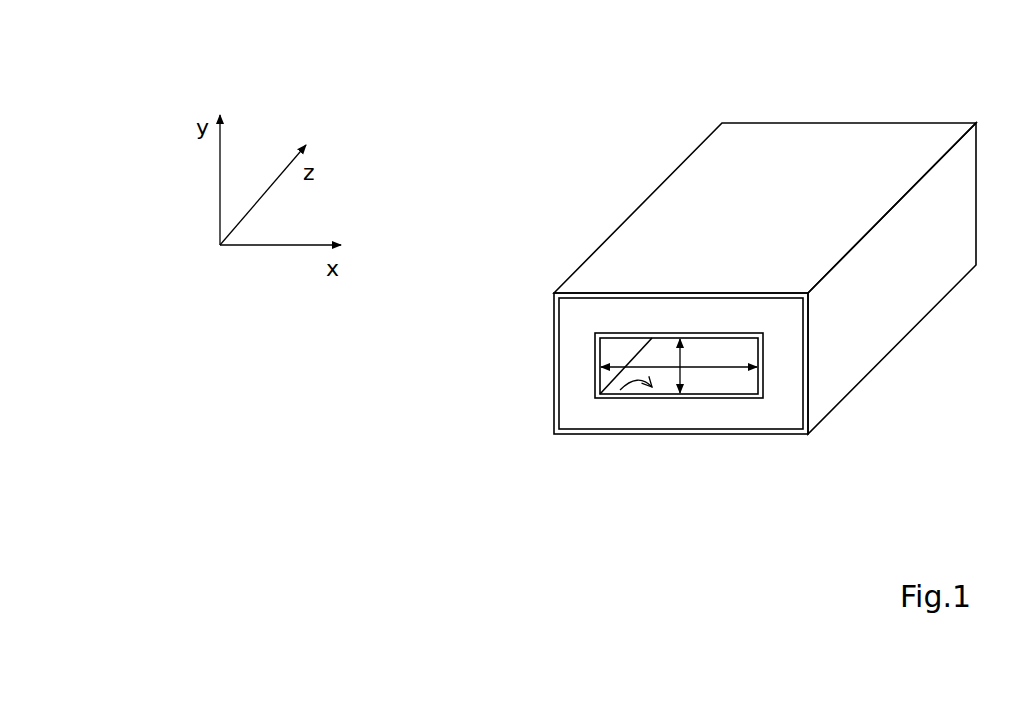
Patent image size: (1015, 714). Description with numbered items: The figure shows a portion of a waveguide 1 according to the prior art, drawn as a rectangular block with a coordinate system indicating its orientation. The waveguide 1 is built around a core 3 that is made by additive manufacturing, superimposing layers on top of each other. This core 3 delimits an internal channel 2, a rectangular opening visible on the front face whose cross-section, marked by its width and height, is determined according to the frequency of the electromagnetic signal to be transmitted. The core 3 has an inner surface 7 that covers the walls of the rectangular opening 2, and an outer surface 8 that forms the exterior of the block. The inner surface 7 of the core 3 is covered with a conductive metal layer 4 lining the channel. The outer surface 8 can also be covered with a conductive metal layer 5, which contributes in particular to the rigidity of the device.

The waveguide 1 is at (713, 348).
The internal channel 2 is at (712, 380).
The core 3 is at (571, 348).
The conductive metal layer 4 is at (672, 400).
The conductive metal layer 5 is at (556, 308).
The inner surface 7 is at (620, 390).
The outer surface 8 is at (861, 145).